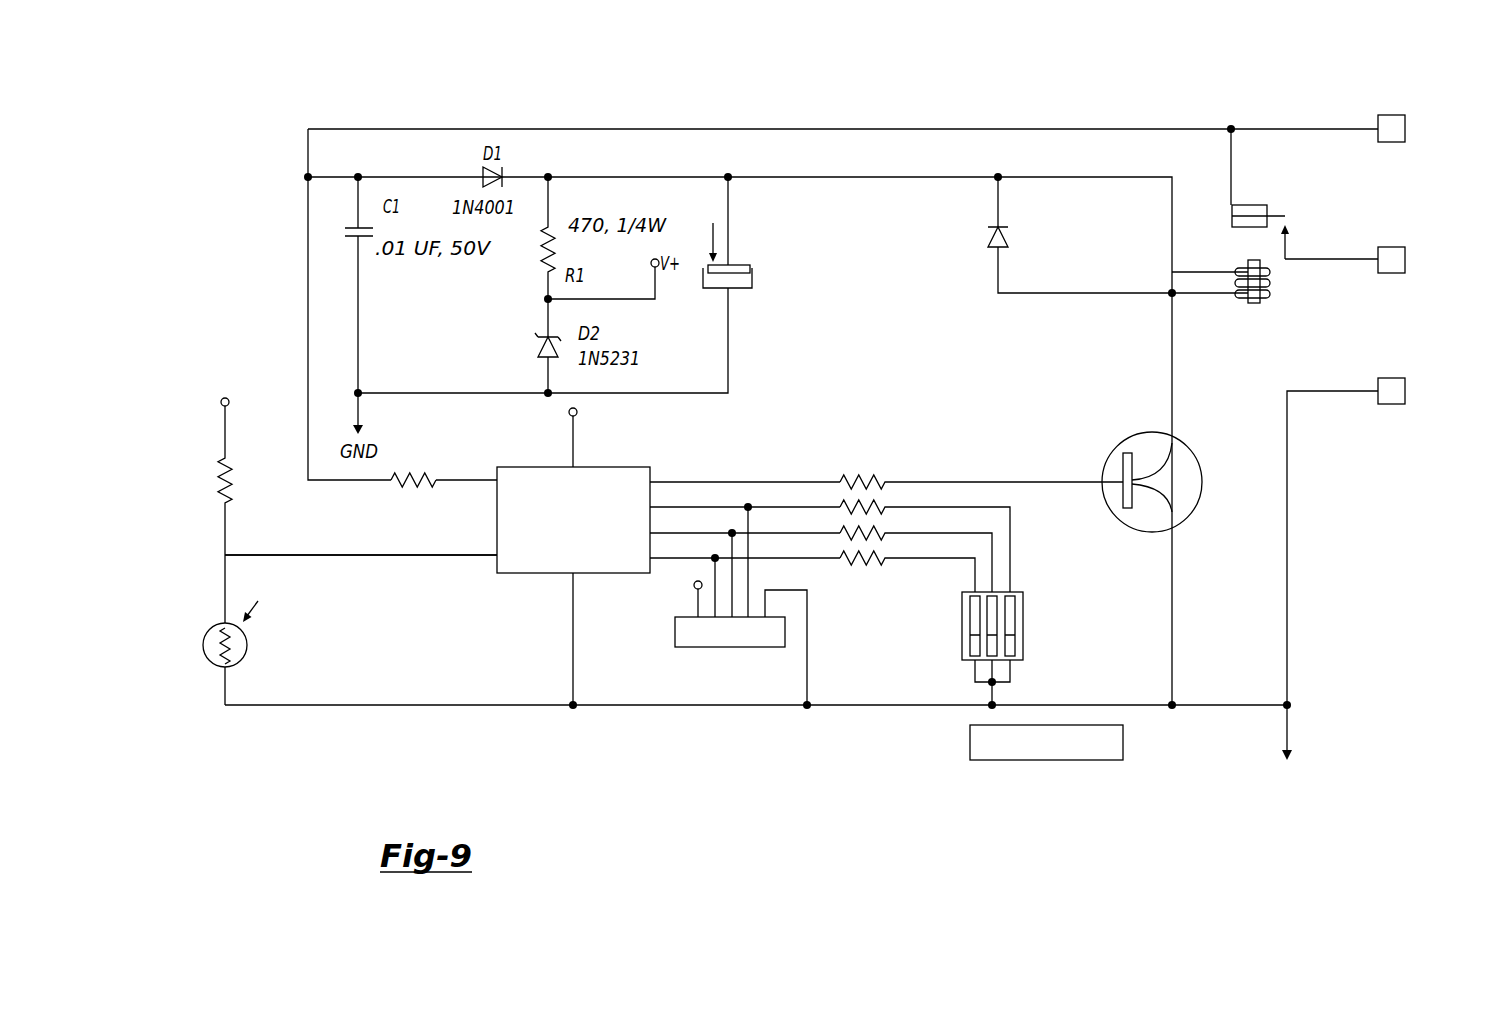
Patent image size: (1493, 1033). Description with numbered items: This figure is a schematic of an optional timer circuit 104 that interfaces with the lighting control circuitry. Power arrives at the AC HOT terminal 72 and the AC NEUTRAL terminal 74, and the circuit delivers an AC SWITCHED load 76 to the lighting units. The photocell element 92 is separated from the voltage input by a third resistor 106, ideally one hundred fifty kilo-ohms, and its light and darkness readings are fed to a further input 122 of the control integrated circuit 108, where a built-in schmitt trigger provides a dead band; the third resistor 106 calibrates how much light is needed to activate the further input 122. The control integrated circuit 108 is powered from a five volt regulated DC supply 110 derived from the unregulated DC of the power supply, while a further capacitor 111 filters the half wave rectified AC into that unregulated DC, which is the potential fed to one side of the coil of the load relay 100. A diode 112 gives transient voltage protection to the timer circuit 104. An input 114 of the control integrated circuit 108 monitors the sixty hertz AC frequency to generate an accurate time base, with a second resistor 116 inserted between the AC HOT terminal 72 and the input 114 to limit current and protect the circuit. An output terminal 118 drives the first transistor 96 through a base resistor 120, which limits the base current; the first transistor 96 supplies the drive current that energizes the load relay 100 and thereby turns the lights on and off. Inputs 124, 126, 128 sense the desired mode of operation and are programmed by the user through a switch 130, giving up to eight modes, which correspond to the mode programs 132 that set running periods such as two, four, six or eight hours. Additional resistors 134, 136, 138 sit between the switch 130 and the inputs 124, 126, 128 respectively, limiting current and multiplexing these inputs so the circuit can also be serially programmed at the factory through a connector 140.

The AC HOT terminal 72 is at (1415, 125).
The AC NEUTRAL terminal 74 is at (1405, 391).
The AC SWITCHED load 76 is at (1405, 260).
The photocell element 92 is at (203, 647).
The first transistor 96 is at (1120, 443).
The load relay 100 is at (1248, 262).
The timer circuit 104 is at (532, 96).
The third resistor 106 is at (217, 485).
The control integrated circuit 108 is at (503, 601).
The 5 V regulated DC supply 110 is at (600, 418).
The further capacitor 111 is at (738, 263).
The diode 112 is at (992, 237).
The input 114 is at (500, 467).
The second resistor 116 is at (400, 461).
The output terminal 118 is at (636, 468).
The base resistor 120 is at (873, 478).
The further input 122 is at (505, 569).
The input 124 is at (597, 558).
The input 126 is at (600, 533).
The input 128 is at (580, 496).
The switch 130 is at (945, 645).
The mode programs 132 is at (982, 847).
The additional resistor 134 is at (915, 583).
The additional resistor 136 is at (922, 548).
The additional resistor 138 is at (922, 518).
The connector 140 is at (657, 648).